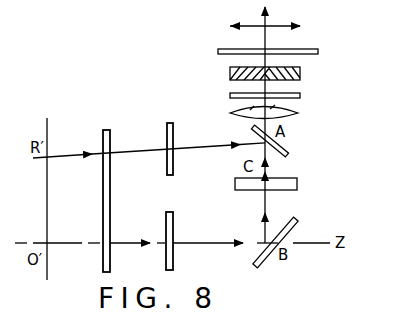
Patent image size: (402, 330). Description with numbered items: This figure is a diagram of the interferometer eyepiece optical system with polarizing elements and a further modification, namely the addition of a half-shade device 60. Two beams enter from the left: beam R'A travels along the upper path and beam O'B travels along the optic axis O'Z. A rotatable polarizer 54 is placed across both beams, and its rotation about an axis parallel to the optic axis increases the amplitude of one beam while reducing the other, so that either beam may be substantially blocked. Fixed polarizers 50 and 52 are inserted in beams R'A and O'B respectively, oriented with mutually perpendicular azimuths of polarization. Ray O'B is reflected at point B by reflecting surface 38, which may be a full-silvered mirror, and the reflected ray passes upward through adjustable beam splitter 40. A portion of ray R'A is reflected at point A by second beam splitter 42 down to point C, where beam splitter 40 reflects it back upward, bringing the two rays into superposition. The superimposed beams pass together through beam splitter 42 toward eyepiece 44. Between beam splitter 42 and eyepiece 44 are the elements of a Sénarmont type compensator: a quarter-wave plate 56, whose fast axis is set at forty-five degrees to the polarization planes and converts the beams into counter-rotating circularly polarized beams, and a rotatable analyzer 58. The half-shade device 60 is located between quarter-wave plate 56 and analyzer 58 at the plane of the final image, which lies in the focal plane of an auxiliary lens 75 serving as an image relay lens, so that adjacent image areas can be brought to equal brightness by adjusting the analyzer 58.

The eyepiece 44 is at (252, 26).
The rotatable analyzer 58 is at (300, 49).
The half-shade device 60 is at (230, 73).
The quarter-wave plate 56 is at (300, 95).
The auxiliary lens 75 is at (298, 112).
The second beam splitter 42 is at (283, 141).
The adjustable beam splitter 40 is at (297, 181).
The reflecting surface 38 is at (285, 220).
The rotatable polarizer 54 is at (103, 137).
The fixed polarizer 50 is at (167, 128).
The fixed polarizer 52 is at (166, 224).